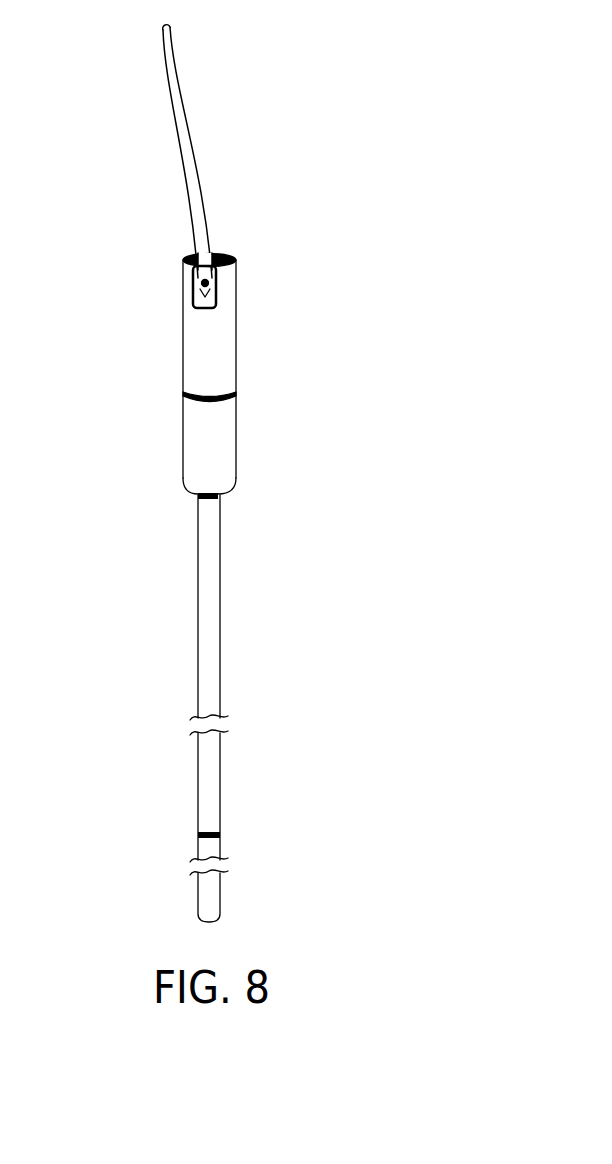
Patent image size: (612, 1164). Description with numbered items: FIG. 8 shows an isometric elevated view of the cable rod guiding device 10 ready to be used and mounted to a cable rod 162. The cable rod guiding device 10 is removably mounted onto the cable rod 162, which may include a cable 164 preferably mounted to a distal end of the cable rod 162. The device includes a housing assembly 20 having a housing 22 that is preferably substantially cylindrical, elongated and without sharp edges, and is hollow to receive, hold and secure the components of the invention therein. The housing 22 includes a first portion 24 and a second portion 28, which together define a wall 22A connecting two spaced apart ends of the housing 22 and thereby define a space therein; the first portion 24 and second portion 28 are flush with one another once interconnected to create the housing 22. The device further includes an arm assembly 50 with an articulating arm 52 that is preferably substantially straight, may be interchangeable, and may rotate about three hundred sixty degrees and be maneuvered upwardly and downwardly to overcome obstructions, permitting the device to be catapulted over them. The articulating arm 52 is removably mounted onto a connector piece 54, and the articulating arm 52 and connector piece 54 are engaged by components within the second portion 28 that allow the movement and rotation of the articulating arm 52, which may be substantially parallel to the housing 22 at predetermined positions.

The cable rod guiding device 10 is at (124, 105).
The housing assembly 20 is at (237, 362).
The housing 22 is at (182, 348).
The wall 22A is at (205, 432).
The first portion 24 is at (208, 463).
The second portion 28 is at (210, 322).
The arm assembly 50 is at (179, 46).
The articulating arm 52 is at (197, 146).
The connector piece 54 is at (193, 304).
The cable rod 162 is at (208, 568).
The cable 164 is at (208, 902).